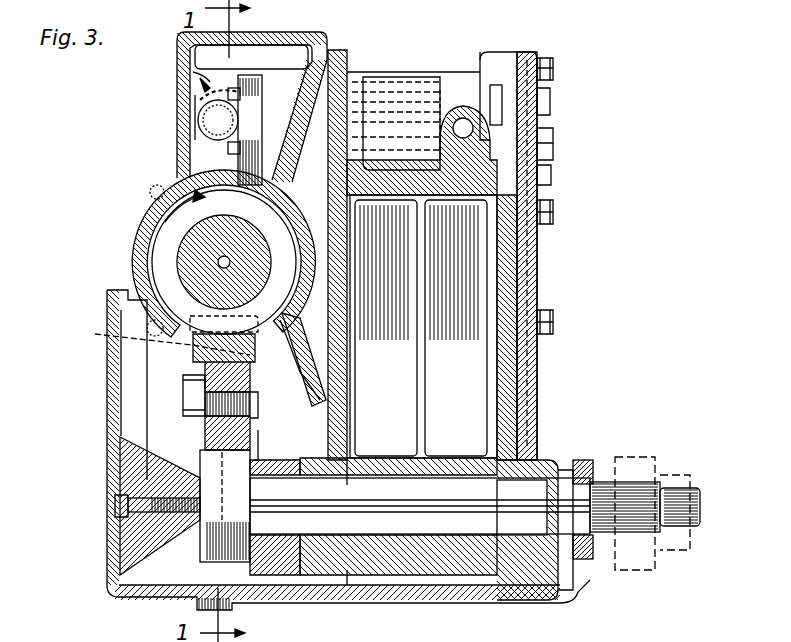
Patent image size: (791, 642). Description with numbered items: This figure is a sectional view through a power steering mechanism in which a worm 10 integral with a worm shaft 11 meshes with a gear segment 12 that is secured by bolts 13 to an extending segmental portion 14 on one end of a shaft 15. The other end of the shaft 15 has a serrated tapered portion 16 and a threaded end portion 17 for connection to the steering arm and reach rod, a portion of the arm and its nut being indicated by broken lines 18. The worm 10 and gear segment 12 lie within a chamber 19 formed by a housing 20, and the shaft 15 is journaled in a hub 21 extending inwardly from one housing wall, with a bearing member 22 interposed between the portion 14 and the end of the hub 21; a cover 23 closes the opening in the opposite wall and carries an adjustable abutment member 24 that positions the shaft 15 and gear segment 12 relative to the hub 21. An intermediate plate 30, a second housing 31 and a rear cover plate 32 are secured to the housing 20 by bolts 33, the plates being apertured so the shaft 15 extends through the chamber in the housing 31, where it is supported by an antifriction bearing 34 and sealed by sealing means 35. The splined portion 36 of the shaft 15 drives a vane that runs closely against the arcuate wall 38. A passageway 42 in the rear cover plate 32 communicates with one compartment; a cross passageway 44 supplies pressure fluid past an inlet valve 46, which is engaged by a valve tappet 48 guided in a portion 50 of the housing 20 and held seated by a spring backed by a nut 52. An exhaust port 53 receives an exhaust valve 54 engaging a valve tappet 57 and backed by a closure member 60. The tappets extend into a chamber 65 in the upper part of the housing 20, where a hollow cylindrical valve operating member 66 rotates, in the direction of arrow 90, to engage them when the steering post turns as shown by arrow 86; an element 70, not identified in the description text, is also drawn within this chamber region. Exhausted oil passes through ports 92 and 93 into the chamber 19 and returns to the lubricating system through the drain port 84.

The worm 10 is at (165, 232).
The worm shaft 11 is at (180, 262).
The gear segment 12 is at (190, 345).
The bolts 13 is at (186, 398).
The segmental portion 14 is at (271, 406).
The shaft 15 is at (275, 523).
The serrated tapered portion 16 is at (640, 530).
The threaded end portion 17 is at (690, 500).
The broken lines 18 is at (688, 478).
The chamber 19 is at (150, 365).
The housing 20 is at (130, 596).
The hub 21 is at (290, 436).
The bearing member 22 is at (252, 560).
The cover 23 is at (108, 425).
The adjustable abutment member 24 is at (118, 508).
The intermediate plate 30 is at (345, 55).
The second housing 31 is at (398, 73).
The rear cover plate 32 is at (505, 52).
The bolts 33 is at (553, 68).
The antifriction bearing 34 is at (538, 468).
The sealing means 35 is at (620, 465).
The splined portion 36 is at (440, 492).
The arcuate wall 38 is at (395, 200).
The passageways 42 is at (515, 258).
The cross passageway 44 is at (472, 128).
The inlet valve 46 is at (553, 145).
The valve tappet 48 is at (228, 152).
The bearing portion 50 is at (251, 58).
The nut 52 is at (551, 168).
The exhaust port 53 is at (458, 90).
The exhaust valve 54 is at (493, 85).
The valve tappet 57 is at (198, 100).
The closure member 60 is at (550, 100).
The chamber 65 is at (255, 52).
The valve operating member 66 is at (196, 122).
The bearing 70 is at (218, 120).
The drain port 84 is at (232, 608).
The arrow 86 is at (150, 192).
The arrow 90 is at (205, 80).
The port 92 is at (330, 272).
The aperture 93 is at (300, 372).